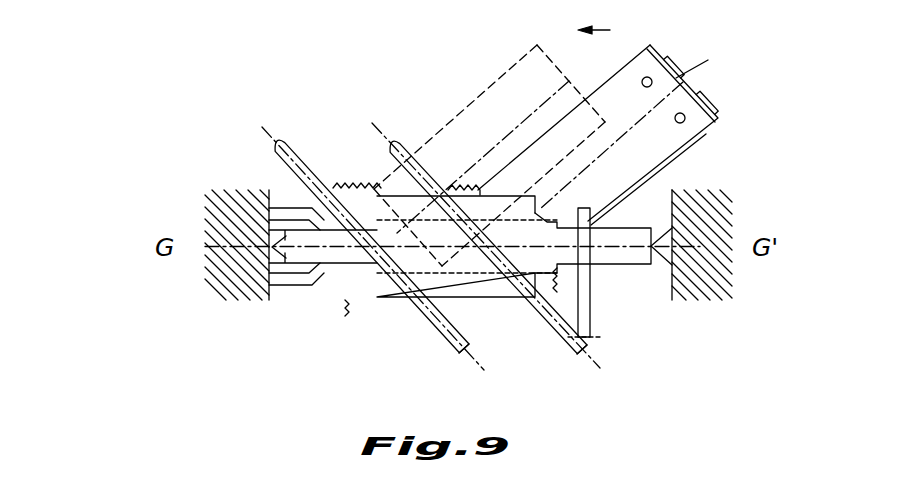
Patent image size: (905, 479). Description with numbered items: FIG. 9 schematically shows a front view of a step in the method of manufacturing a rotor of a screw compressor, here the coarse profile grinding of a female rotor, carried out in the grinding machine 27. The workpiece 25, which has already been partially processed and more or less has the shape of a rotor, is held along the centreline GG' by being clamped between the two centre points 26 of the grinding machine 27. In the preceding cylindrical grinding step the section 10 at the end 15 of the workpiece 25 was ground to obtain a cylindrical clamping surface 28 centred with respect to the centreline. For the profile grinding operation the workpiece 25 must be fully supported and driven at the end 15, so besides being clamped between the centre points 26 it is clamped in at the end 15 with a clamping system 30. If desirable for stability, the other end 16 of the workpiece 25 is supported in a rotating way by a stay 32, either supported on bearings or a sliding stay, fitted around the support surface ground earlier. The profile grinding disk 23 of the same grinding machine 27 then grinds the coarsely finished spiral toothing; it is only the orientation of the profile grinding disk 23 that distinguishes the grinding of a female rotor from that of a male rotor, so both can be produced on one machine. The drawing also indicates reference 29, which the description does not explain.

The section 10 is at (333, 334).
The end 15 is at (118, 241).
The other end 16 is at (808, 243).
The profile grinding disk 23 is at (400, 148).
The workpiece 25 is at (443, 90).
The centre points 26 is at (650, 284).
The grinding machine 27 is at (713, 200).
The cylindrical clamping surface 28 is at (343, 300).
The tool shank ends 29 is at (535, 345).
The clamping system 30 is at (274, 262).
The stay 32 is at (662, 170).